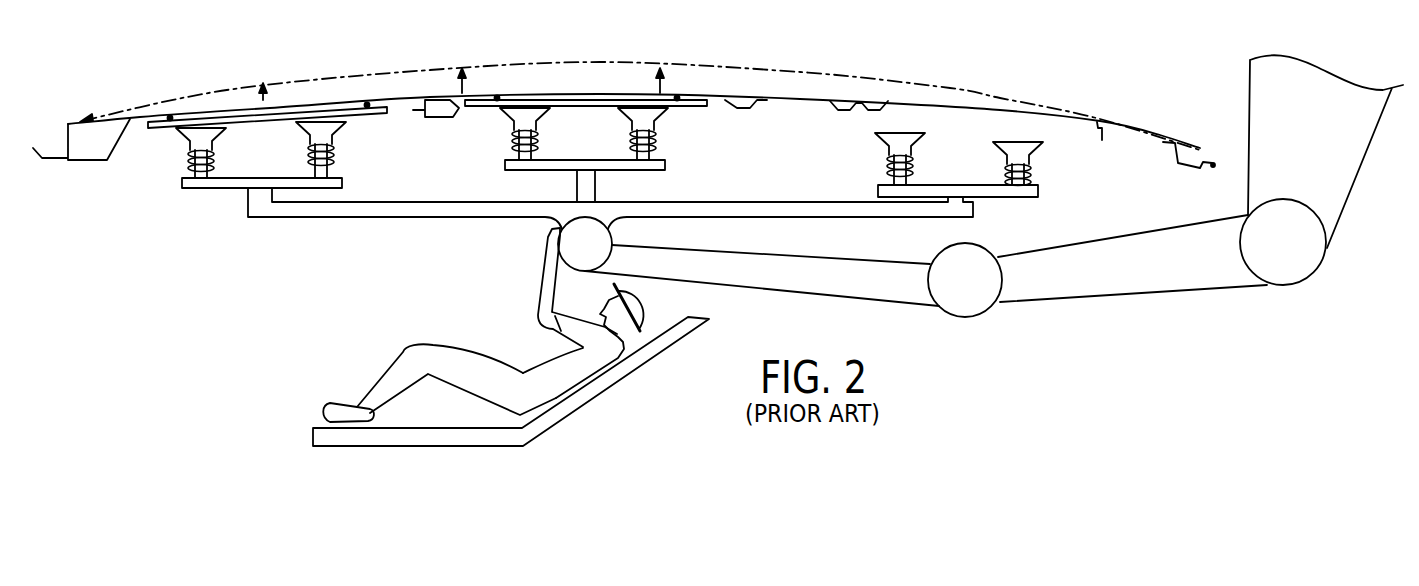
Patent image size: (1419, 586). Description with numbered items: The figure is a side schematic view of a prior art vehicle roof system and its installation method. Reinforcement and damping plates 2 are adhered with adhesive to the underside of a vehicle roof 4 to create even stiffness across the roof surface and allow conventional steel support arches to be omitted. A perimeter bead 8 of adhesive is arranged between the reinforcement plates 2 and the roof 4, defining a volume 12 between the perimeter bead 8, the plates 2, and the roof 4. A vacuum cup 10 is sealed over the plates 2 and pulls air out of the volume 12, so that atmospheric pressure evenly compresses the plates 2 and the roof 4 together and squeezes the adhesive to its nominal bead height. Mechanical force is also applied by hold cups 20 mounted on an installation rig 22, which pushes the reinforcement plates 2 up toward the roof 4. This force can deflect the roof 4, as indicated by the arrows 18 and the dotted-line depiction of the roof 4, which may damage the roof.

The reinforcement and damping plate 2 is at (156, 128).
The vehicle roof 4 is at (802, 98).
The perimeter bead 8 is at (367, 105).
The vacuum cup 10 is at (323, 133).
The volume 12 is at (233, 108).
The arrows 18 is at (265, 100).
The hold cup 20 is at (203, 138).
The installation rig 22 is at (380, 268).